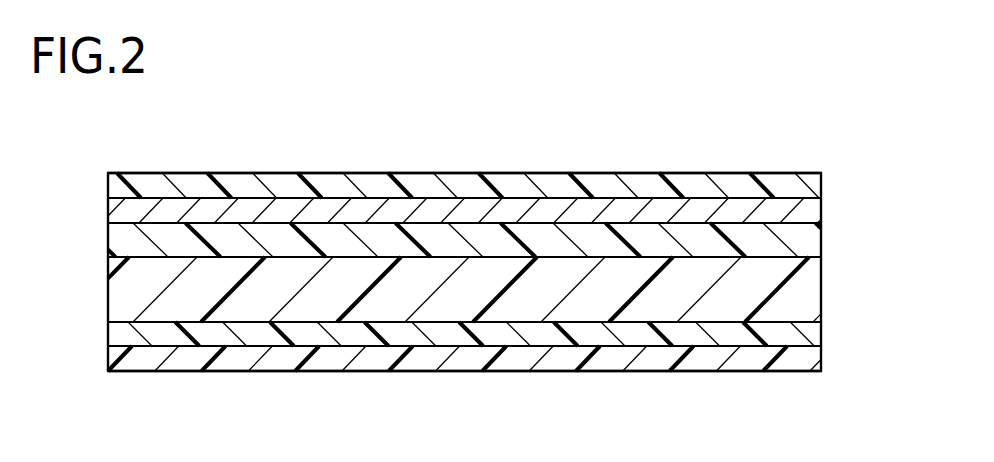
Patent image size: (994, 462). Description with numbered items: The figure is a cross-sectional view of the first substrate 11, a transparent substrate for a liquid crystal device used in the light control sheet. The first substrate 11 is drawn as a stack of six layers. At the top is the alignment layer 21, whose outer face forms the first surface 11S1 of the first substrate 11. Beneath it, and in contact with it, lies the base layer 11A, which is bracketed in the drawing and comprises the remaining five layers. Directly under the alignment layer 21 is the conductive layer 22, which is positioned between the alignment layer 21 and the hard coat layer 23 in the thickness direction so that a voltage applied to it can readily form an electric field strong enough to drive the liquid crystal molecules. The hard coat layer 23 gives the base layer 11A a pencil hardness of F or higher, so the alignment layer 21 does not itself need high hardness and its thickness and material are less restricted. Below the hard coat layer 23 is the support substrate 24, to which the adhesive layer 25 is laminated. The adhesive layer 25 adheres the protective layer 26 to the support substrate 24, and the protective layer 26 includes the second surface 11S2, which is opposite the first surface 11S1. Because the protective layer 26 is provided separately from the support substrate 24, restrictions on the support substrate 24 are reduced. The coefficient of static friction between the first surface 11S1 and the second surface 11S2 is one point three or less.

The first substrate 11 is at (775, 142).
The first surface 11S1 is at (450, 173).
The second surface 11S2 is at (448, 372).
The base layer 11A is at (890, 198).
The alignment layer 21 is at (825, 183).
The conductive layer 22 is at (825, 208).
The hard coat layer 23 is at (825, 238).
The support substrate 24 is at (825, 284).
The adhesive layer 25 is at (825, 333).
The protective layer 26 is at (825, 356).